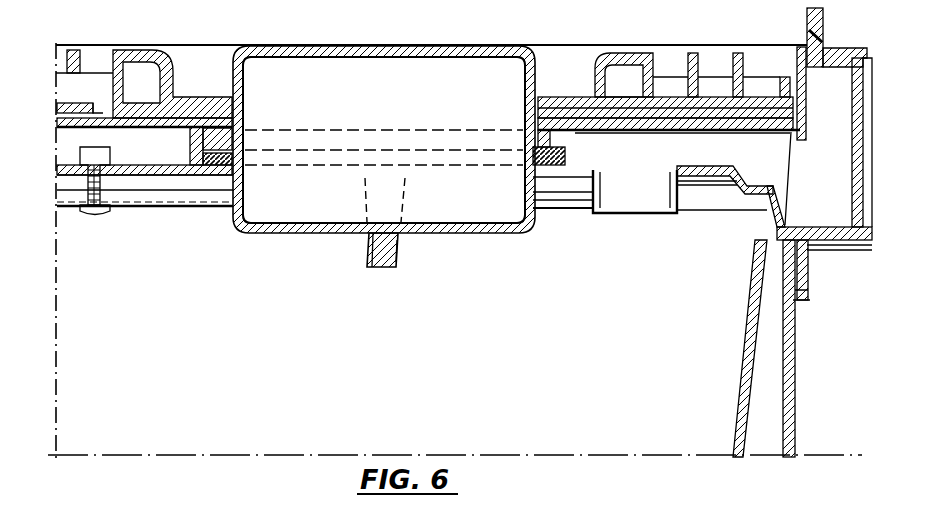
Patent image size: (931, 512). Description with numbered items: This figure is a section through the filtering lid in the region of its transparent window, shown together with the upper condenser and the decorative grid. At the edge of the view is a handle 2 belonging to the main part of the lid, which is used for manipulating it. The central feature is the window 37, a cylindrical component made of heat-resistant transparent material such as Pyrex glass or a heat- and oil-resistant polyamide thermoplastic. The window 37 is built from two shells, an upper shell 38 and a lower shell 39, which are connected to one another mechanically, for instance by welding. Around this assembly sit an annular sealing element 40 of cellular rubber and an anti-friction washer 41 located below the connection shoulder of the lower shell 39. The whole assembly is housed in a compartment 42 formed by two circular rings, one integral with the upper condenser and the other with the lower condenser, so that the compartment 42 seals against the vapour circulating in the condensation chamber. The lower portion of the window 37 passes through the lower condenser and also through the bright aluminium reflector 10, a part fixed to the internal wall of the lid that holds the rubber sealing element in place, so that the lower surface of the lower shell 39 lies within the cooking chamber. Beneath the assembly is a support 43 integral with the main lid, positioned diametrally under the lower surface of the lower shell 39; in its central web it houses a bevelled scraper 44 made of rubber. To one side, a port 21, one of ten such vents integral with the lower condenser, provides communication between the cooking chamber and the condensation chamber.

The handle 2 is at (840, 48).
The reflector 10 is at (147, 208).
The port 21 is at (645, 202).
The window 37 is at (450, 100).
The upper shell 38 is at (480, 46).
The lower shell 39 is at (478, 233).
The annular sealing element 40 is at (570, 181).
The anti-friction washer 41 is at (568, 156).
The compartment 42 is at (203, 143).
The support 43 is at (368, 268).
The bevelled scraper 44 is at (397, 245).